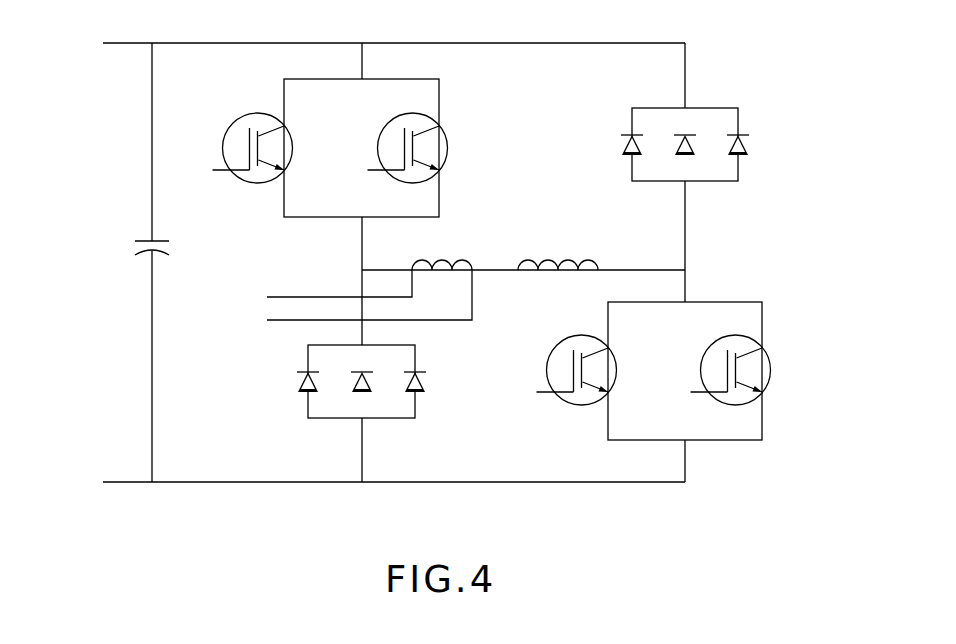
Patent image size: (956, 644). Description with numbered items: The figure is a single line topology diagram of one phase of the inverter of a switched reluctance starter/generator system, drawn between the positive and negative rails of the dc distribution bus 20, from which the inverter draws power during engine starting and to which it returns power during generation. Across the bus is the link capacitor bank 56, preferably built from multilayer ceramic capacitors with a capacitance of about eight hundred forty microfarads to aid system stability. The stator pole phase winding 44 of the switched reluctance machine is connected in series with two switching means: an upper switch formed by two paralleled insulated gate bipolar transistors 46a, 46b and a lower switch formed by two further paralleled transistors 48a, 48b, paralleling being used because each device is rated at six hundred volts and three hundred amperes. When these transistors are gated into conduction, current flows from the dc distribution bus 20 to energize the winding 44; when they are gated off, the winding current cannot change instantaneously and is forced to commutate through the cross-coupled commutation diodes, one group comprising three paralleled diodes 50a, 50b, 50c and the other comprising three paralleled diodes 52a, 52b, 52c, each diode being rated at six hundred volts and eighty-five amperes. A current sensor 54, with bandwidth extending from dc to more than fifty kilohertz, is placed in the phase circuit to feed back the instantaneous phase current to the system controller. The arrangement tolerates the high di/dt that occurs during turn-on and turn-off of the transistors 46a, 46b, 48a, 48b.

The dc distribution bus 20 is at (187, 43).
The stator pole phase winding 44 is at (565, 260).
The IGBT 46a is at (262, 113).
The IGBT 46b is at (447, 138).
The IGBT 48a is at (588, 335).
The IGBT 48b is at (773, 373).
The diode 50a is at (625, 143).
The diode 50b is at (697, 142).
The diode 50c is at (750, 145).
The diode 52a is at (300, 382).
The diode 52b is at (375, 387).
The diode 52c is at (423, 375).
The current sensor 54 is at (440, 262).
The link capacitor bank 56 is at (145, 240).